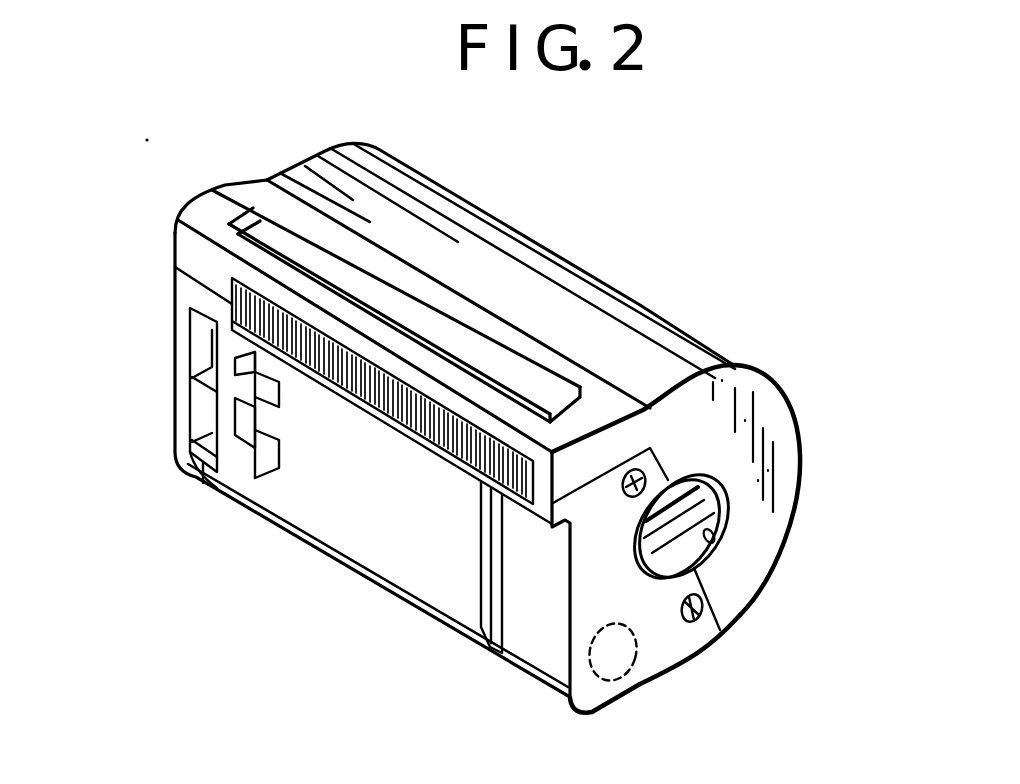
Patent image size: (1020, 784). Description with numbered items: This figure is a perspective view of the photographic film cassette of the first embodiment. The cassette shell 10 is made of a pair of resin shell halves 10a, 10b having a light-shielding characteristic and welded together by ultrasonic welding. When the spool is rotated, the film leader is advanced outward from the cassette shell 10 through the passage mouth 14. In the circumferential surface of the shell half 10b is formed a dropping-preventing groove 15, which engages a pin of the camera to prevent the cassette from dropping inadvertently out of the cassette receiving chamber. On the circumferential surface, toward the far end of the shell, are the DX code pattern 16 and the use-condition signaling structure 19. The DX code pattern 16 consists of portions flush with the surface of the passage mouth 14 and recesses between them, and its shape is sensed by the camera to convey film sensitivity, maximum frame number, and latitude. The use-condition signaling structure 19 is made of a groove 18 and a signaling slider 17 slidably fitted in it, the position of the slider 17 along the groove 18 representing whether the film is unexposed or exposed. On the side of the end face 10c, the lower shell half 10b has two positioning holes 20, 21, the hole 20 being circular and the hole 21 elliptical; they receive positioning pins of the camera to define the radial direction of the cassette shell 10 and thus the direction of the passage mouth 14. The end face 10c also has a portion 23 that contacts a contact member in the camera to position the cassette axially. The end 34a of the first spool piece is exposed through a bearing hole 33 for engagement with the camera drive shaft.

The cassette shell 10 is at (844, 604).
The shell half 10a is at (737, 601).
The shell half 10b is at (705, 637).
The end face 10c is at (652, 653).
The passage mouth 14 is at (366, 408).
The dropping-preventing groove 15 is at (488, 650).
The DX code pattern 16 is at (265, 468).
The signaling slider 17 is at (200, 413).
The groove 18 is at (205, 483).
The use-condition signaling structure 19 is at (157, 541).
The positioning hole 20 is at (636, 477).
The positioning hole 21 is at (688, 623).
The portion 23 is at (628, 666).
The bearing hole 33 is at (712, 536).
The end of the first spool piece 34a is at (648, 558).